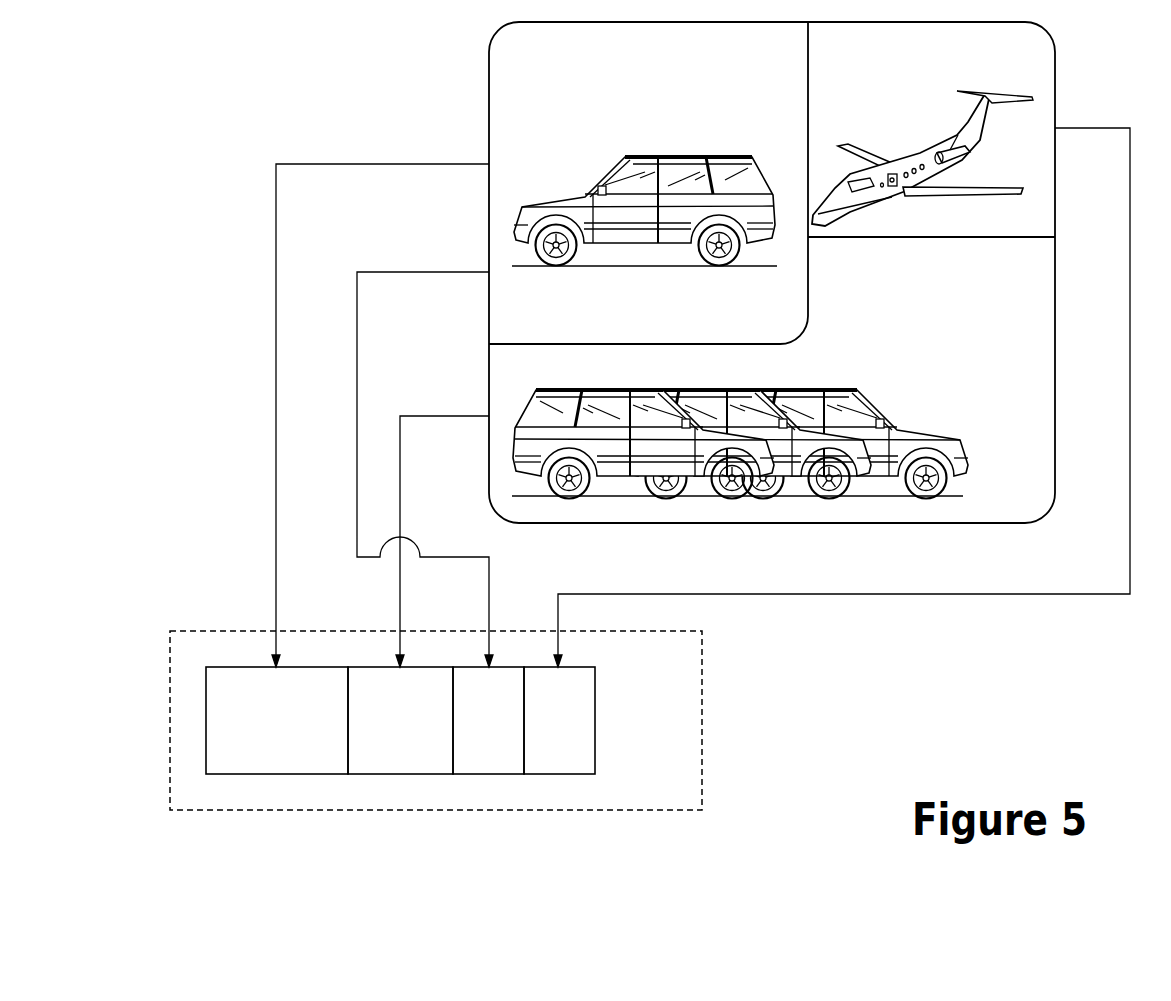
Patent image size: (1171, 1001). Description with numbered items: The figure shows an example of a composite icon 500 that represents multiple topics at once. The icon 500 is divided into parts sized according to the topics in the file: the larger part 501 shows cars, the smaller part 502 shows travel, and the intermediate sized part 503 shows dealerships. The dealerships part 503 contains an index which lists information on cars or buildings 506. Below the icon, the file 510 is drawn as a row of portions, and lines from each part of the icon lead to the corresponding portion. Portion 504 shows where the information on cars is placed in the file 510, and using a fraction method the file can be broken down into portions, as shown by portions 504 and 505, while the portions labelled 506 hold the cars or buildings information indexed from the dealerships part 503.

The composite icon 500 is at (1168, 71).
The cars part of the icon 501 is at (757, 74).
The travel part of the icon 502 is at (1029, 71).
The dealerships part of the icon 503 is at (931, 384).
The cars information portion of the file 504 is at (296, 734).
The file fraction portion 505 is at (508, 734).
The index information on cars or buildings 506 is at (419, 734).
The file 510 is at (671, 789).